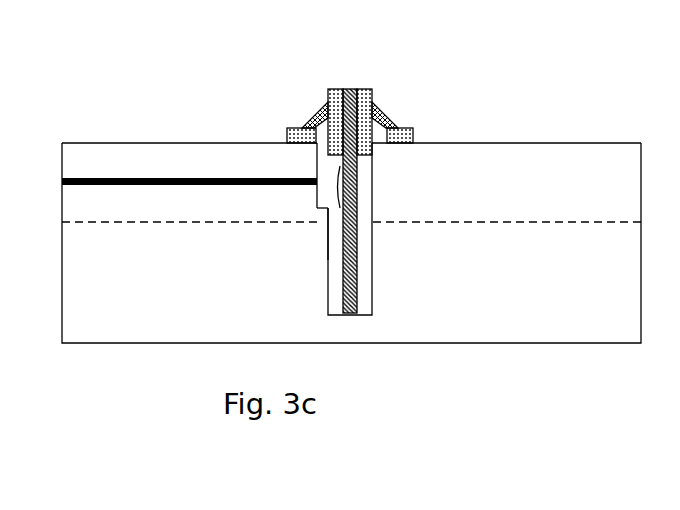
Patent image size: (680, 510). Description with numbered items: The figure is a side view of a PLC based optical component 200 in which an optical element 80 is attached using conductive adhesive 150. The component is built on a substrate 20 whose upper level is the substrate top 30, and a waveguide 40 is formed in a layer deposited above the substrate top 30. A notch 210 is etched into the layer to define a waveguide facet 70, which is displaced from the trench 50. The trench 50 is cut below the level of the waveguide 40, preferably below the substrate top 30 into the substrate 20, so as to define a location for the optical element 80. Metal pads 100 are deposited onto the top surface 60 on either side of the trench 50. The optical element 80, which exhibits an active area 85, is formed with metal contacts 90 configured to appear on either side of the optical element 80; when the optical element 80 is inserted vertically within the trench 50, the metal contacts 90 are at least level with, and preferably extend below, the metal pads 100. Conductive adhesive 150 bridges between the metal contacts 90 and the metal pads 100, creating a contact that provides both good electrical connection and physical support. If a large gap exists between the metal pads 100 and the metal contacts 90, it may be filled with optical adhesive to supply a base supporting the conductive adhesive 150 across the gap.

The PLC based optical component 200 is at (57, 120).
The substrate 20 is at (62, 314).
The substrate top 30 is at (73, 224).
The waveguide 40 is at (135, 178).
The trench 50 is at (332, 302).
The top surface 60 is at (528, 142).
The waveguide facet 70 is at (318, 190).
The optical element 80 is at (348, 90).
The active area 85 is at (332, 202).
The metal contacts 90 is at (328, 97).
The metal pads 100 is at (285, 129).
The conductive adhesive 150 is at (302, 122).
The notch 210 is at (318, 208).